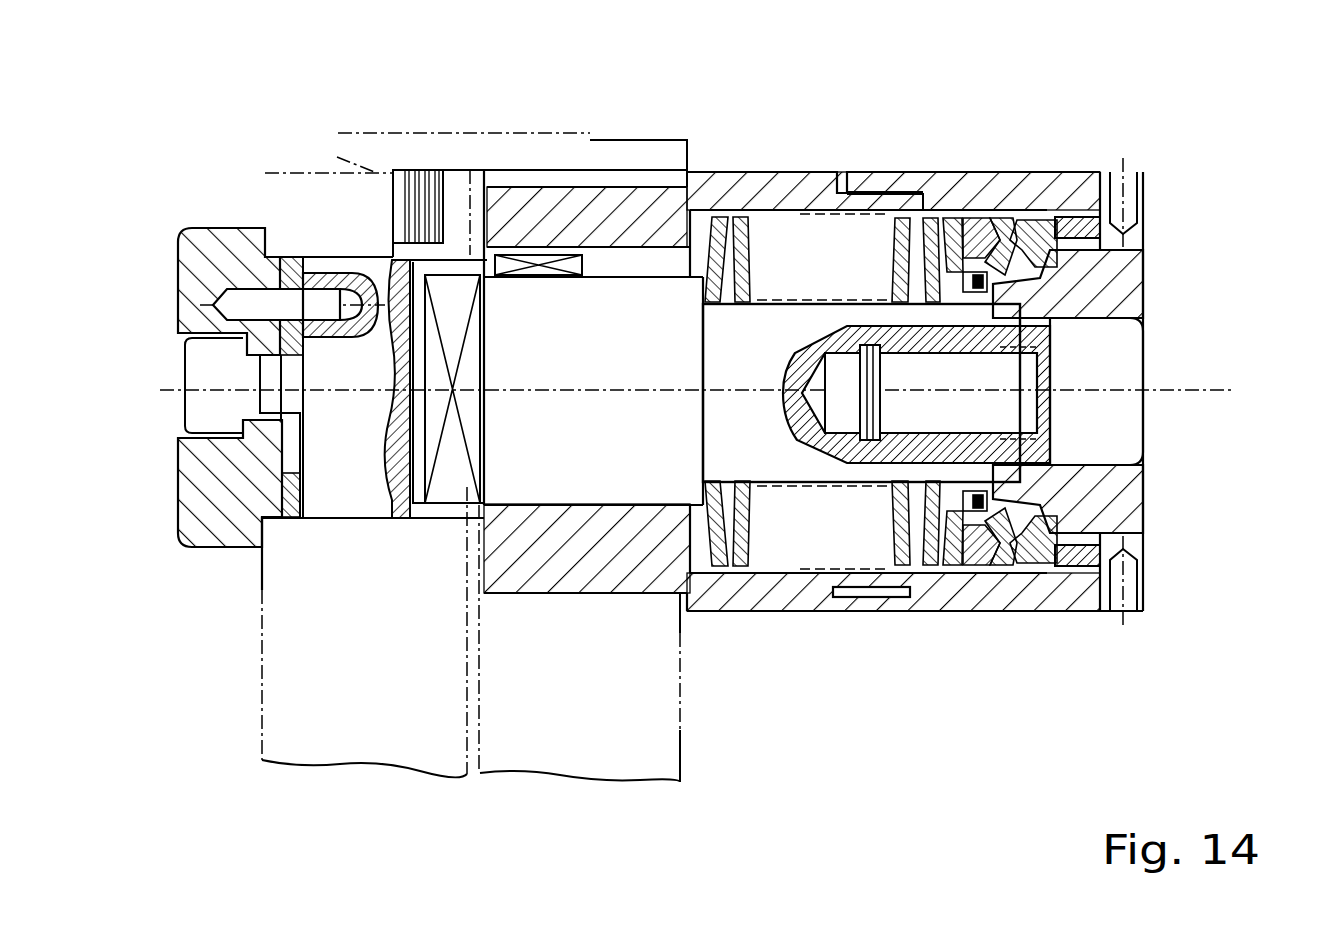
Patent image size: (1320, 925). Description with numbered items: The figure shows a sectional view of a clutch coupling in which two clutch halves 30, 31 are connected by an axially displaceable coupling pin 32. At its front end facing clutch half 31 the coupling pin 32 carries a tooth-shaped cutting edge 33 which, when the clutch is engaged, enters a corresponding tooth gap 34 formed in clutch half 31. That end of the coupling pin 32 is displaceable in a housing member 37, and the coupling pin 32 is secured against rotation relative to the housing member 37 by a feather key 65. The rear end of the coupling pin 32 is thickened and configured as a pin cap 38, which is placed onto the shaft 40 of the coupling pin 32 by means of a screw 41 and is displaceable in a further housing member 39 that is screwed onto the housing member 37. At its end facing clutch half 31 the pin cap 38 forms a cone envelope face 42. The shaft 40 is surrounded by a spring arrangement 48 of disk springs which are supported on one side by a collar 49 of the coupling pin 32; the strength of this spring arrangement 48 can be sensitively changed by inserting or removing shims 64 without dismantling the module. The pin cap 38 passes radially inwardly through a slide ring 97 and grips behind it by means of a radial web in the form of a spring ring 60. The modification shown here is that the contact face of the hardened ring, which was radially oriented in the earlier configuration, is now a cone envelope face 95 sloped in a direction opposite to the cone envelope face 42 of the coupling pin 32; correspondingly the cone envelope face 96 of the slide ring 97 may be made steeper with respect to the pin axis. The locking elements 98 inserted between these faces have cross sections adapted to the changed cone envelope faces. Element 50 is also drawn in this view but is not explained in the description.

The clutch half 30 is at (570, 752).
The clutch half 31 is at (295, 664).
The coupling pin 32 is at (655, 292).
The tooth-shaped cutting edge 33 is at (462, 513).
The tooth gap 34 is at (437, 513).
The housing member 37 is at (798, 175).
The pin cap 38 is at (1127, 280).
The housing member 39 is at (946, 176).
The shaft 40 is at (757, 453).
The screw 41 is at (1122, 360).
The cone envelope face 42 is at (1052, 498).
The spring arrangement 48 is at (828, 548).
The collar 49 is at (708, 475).
The set screw 50 is at (1132, 540).
The spring ring 60 is at (965, 505).
The shims 64 is at (957, 215).
The feather key 65 is at (540, 292).
The cone envelope face 95 is at (1082, 215).
The cone envelope face 96 is at (1148, 240).
The slide ring 97 is at (990, 222).
The locking elements 98 is at (1045, 556).